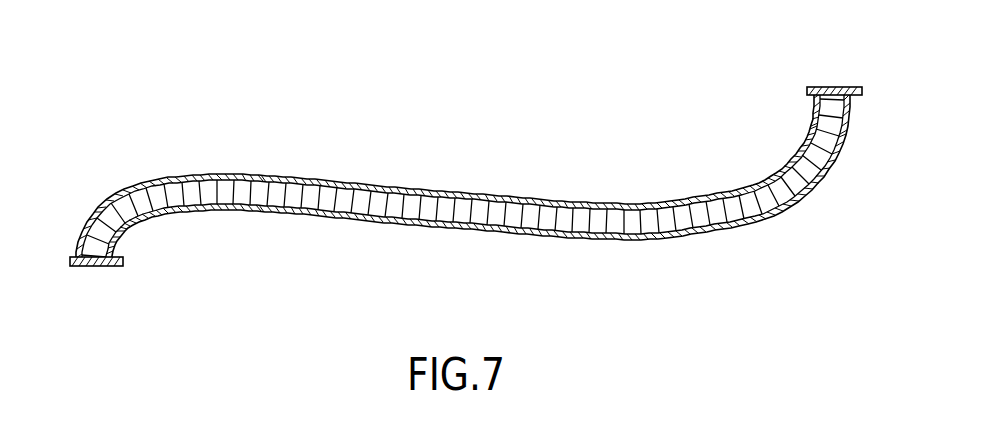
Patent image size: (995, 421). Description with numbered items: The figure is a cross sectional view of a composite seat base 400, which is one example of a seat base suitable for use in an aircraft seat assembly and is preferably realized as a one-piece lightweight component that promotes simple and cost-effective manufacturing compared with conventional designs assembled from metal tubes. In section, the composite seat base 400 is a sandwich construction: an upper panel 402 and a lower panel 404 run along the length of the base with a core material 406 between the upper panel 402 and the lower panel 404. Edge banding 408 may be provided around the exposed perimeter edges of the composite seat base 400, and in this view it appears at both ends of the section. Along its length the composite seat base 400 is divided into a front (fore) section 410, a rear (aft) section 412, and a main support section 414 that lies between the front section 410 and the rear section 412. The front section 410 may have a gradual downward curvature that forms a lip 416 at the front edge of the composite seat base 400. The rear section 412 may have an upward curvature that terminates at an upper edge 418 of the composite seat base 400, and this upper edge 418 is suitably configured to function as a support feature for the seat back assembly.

The composite seat base 400 is at (462, 86).
The upper panel 402 is at (623, 202).
The lower panel 404 is at (380, 222).
The core material 406 is at (288, 193).
The edge banding 408 is at (120, 264).
The front section 410 is at (101, 198).
The rear section 412 is at (854, 132).
The main support section 414 is at (469, 183).
The lip 416 is at (83, 232).
The upper edge 418 is at (813, 105).